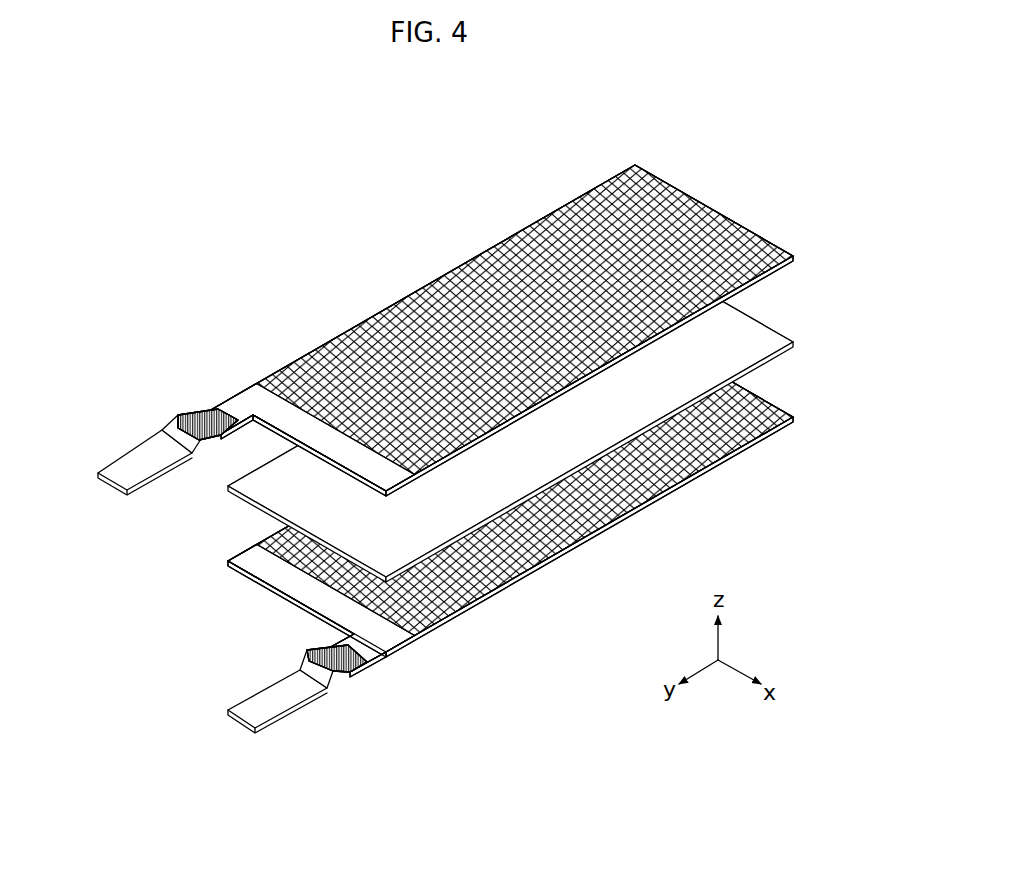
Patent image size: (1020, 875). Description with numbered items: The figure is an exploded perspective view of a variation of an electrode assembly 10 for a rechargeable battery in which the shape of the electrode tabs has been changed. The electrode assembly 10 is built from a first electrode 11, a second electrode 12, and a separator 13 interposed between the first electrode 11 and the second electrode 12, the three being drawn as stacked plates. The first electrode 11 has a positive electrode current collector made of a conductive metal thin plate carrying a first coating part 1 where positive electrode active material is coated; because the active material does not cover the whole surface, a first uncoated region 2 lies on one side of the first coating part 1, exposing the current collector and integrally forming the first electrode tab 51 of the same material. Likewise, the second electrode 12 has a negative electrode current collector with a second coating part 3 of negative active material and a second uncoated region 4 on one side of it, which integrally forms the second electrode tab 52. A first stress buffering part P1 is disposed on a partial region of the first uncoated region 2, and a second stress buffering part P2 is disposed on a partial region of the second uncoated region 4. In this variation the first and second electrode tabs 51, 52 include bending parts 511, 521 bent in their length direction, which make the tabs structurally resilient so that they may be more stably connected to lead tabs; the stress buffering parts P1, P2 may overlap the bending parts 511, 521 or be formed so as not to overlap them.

The electrode assembly 10 is at (401, 168).
The first coating part 1 is at (293, 364).
The first uncoated region 2 is at (240, 400).
The first electrode 11 is at (283, 302).
The second coating part 3 is at (445, 623).
The second uncoated region 4 is at (382, 643).
The second electrode 12 is at (490, 672).
The separator 13 is at (752, 333).
The first electrode tab 51 is at (113, 485).
The bending part 511 is at (177, 416).
The first stress buffering part P1 is at (201, 427).
The second electrode tab 52 is at (243, 718).
The bending part 521 is at (307, 650).
The second stress buffering part P2 is at (360, 672).